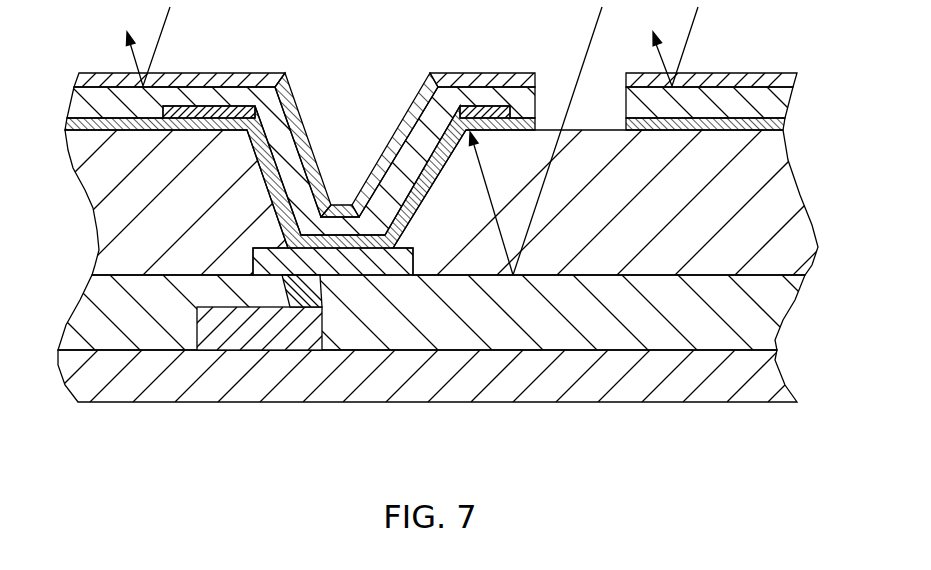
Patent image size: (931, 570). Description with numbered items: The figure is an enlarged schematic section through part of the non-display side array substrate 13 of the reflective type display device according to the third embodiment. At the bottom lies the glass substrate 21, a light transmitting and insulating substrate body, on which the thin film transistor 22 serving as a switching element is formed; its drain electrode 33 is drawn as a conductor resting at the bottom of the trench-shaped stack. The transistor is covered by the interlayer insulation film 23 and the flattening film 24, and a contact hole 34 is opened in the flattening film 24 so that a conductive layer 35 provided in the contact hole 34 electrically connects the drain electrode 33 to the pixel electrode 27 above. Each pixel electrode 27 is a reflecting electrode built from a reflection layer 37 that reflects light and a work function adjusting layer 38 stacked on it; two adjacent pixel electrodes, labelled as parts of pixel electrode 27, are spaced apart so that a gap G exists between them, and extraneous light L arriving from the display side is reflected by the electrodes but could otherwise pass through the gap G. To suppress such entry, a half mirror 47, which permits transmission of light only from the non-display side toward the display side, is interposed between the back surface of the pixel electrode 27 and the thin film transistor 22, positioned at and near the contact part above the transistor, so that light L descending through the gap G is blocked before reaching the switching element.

The array substrate 13 is at (494, 48).
The glass substrate 21 is at (770, 378).
The thin film transistor 22 is at (288, 332).
The interlayer insulation film 23 is at (772, 320).
The flattening film 24 is at (782, 185).
The pixel electrode 27 is at (459, 126).
The drain electrode 33 is at (383, 263).
The contact hole 34 is at (322, 275).
The conductive layer 35 is at (462, 105).
The reflection layer 37 is at (783, 100).
The work function adjusting layer 38 is at (783, 78).
The half mirror 47 is at (775, 123).
The extraneous light L is at (168, 16).
The gap G is at (626, 85).